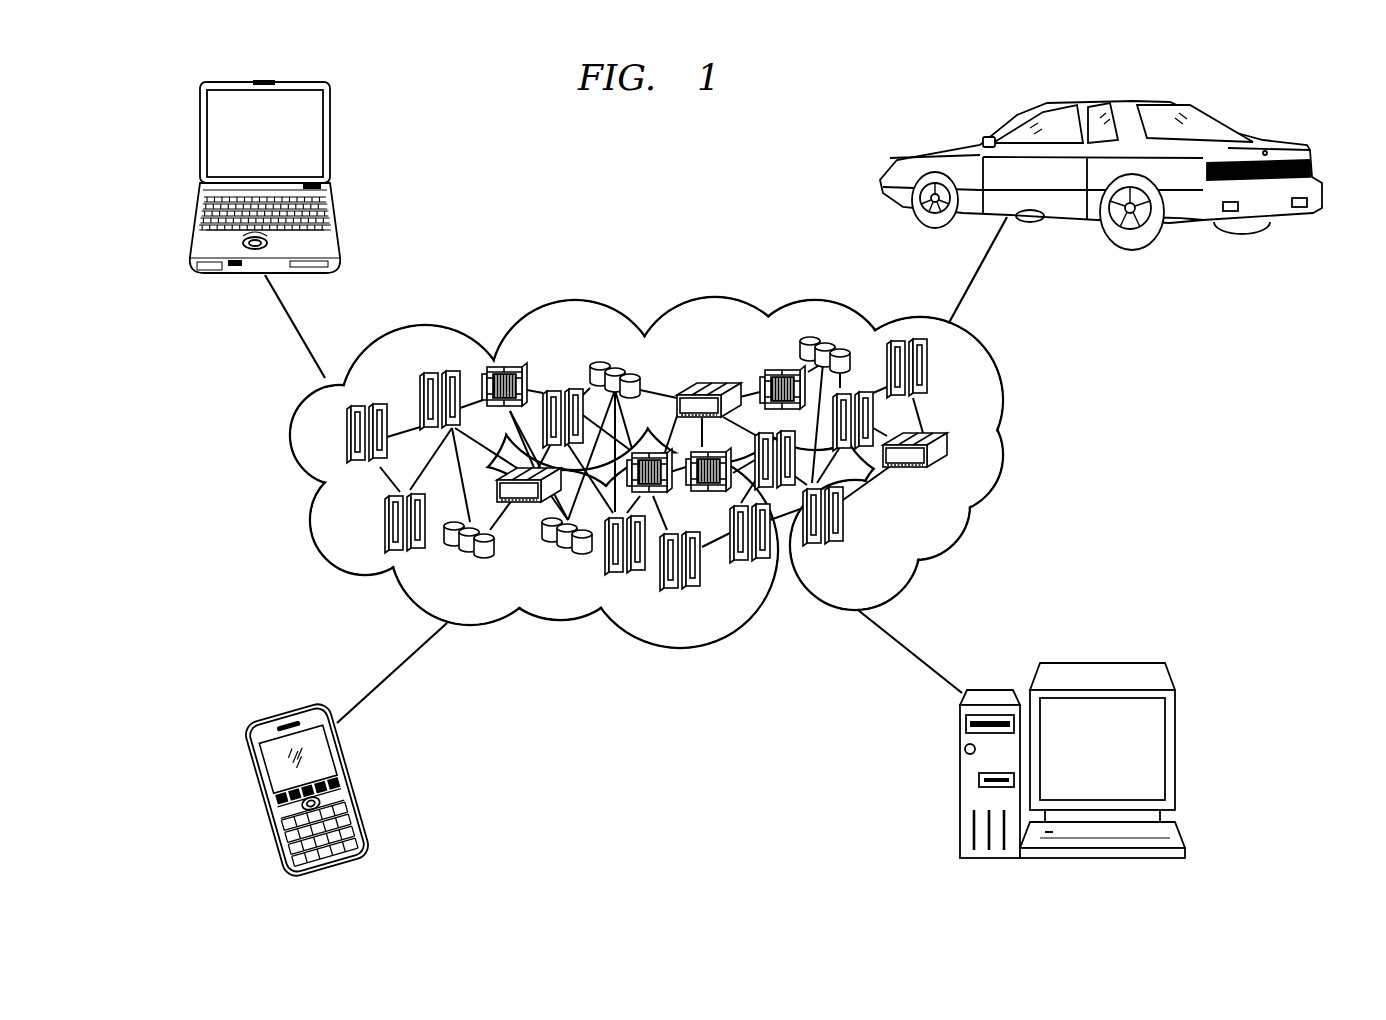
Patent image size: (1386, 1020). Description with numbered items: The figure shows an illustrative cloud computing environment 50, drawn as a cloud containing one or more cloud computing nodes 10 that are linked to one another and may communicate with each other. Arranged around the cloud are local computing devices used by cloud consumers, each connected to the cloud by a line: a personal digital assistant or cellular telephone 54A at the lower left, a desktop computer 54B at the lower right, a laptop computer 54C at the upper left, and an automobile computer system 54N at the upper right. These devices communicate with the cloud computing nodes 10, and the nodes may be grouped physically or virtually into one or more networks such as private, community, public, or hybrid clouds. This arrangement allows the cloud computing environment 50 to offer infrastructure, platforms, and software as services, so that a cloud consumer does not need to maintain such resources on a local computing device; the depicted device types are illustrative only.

The cloud computing nodes 10 is at (953, 477).
The cloud computing environment 50 is at (1002, 392).
The personal digital assistant (PDA) or cellular telephone 54A is at (248, 775).
The desktop computer 54B is at (1102, 663).
The laptop computer 54C is at (200, 125).
The automobile computer system 54N is at (1283, 140).